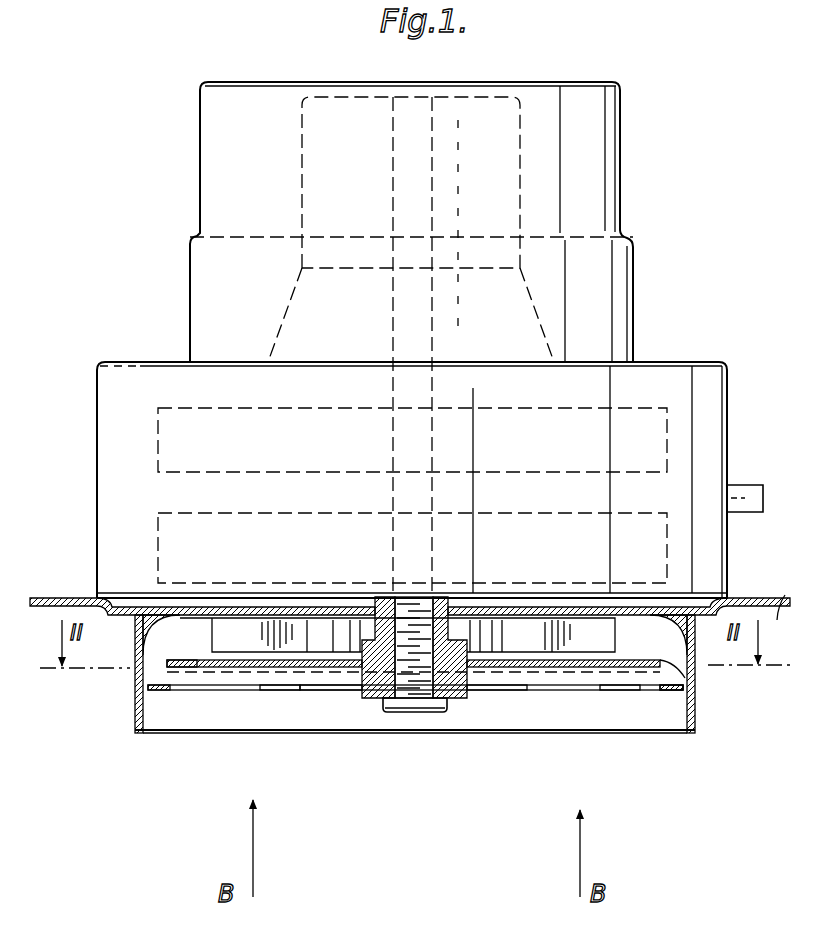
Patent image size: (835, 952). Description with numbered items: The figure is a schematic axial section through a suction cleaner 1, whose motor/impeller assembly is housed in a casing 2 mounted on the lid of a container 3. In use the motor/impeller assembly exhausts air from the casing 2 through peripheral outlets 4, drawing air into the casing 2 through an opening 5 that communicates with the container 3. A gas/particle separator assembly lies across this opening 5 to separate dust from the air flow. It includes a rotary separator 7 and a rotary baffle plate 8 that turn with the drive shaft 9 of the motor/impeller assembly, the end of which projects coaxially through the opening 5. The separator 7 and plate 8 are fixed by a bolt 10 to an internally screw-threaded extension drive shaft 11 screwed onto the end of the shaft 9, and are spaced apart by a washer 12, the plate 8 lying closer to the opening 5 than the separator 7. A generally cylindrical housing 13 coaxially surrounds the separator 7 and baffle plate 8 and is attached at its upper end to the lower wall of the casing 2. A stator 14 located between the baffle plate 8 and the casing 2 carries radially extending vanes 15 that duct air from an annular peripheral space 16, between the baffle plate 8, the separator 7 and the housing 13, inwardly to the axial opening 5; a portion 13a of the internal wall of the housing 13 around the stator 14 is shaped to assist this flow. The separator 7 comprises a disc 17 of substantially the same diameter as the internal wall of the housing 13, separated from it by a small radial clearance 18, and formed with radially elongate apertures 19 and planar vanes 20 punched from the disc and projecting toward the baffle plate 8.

The suction cleaner 1 is at (166, 347).
The casing 2 is at (97, 446).
The container 3 is at (60, 598).
The peripheral outlets 4 is at (752, 497).
The opening 5 is at (512, 600).
The rotary separator 7 is at (187, 700).
The rotary baffle plate 8 is at (662, 664).
The drive shaft 9 is at (393, 600).
The bolt 10 is at (455, 710).
The extension drive shaft 11 is at (450, 600).
The washer 12 is at (497, 689).
The housing 13 is at (133, 723).
The portion of the internal wall of the housing 13a is at (700, 592).
The stator 14 is at (203, 647).
The radially extending vanes 15 is at (253, 645).
The annular peripheral space 16 is at (157, 666).
The disc 17 is at (348, 691).
The radial clearance 18 is at (683, 695).
The apertures 19 is at (278, 694).
The vanes 20 is at (617, 677).